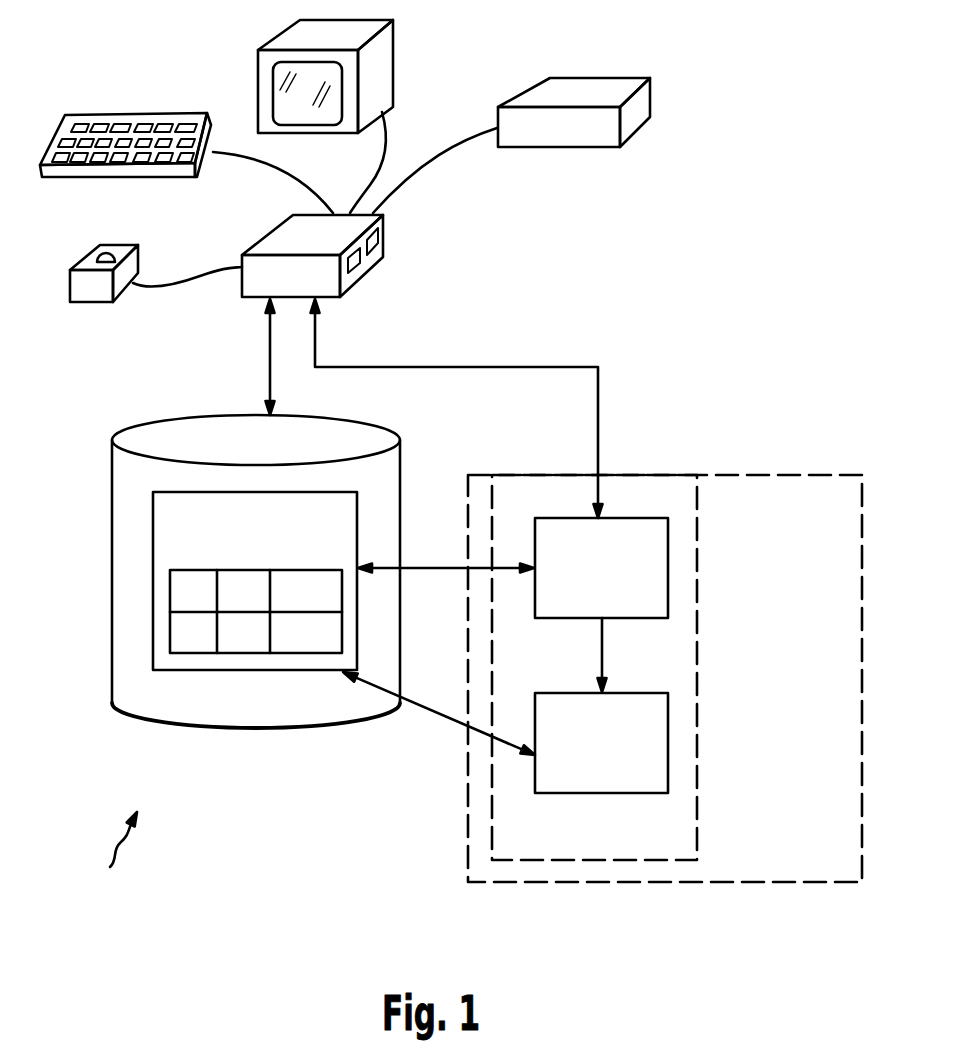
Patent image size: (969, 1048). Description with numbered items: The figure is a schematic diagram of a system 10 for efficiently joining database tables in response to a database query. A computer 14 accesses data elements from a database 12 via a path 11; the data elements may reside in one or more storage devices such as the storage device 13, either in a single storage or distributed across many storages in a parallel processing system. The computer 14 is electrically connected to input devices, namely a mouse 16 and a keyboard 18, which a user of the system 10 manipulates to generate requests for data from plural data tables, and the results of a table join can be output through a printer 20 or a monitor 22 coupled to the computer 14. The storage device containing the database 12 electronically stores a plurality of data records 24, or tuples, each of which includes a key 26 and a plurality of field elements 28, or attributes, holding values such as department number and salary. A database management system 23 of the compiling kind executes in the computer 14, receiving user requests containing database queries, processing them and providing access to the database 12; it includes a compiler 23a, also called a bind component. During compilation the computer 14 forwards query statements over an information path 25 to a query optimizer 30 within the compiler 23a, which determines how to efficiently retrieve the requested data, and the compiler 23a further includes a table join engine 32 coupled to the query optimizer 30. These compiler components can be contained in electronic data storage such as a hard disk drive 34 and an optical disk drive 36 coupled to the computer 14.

The system 10 is at (100, 899).
The path 11 is at (267, 343).
The database 12 is at (390, 472).
The storage device 13 is at (112, 462).
The computer 14 is at (353, 287).
The mouse 16 is at (82, 260).
The keyboard 18 is at (128, 115).
The printer 20 is at (607, 78).
The monitor 22 is at (397, 50).
The database management system 23 is at (805, 475).
The compiler 23a is at (657, 473).
The data record 24 is at (168, 587).
The information path 25 is at (487, 365).
The key 26 is at (193, 655).
The field elements 28 is at (272, 655).
The query optimizer 30 is at (632, 692).
The table join engine 32 is at (575, 620).
The hard disk drive 34 is at (378, 245).
The optical disk drive 36 is at (362, 268).